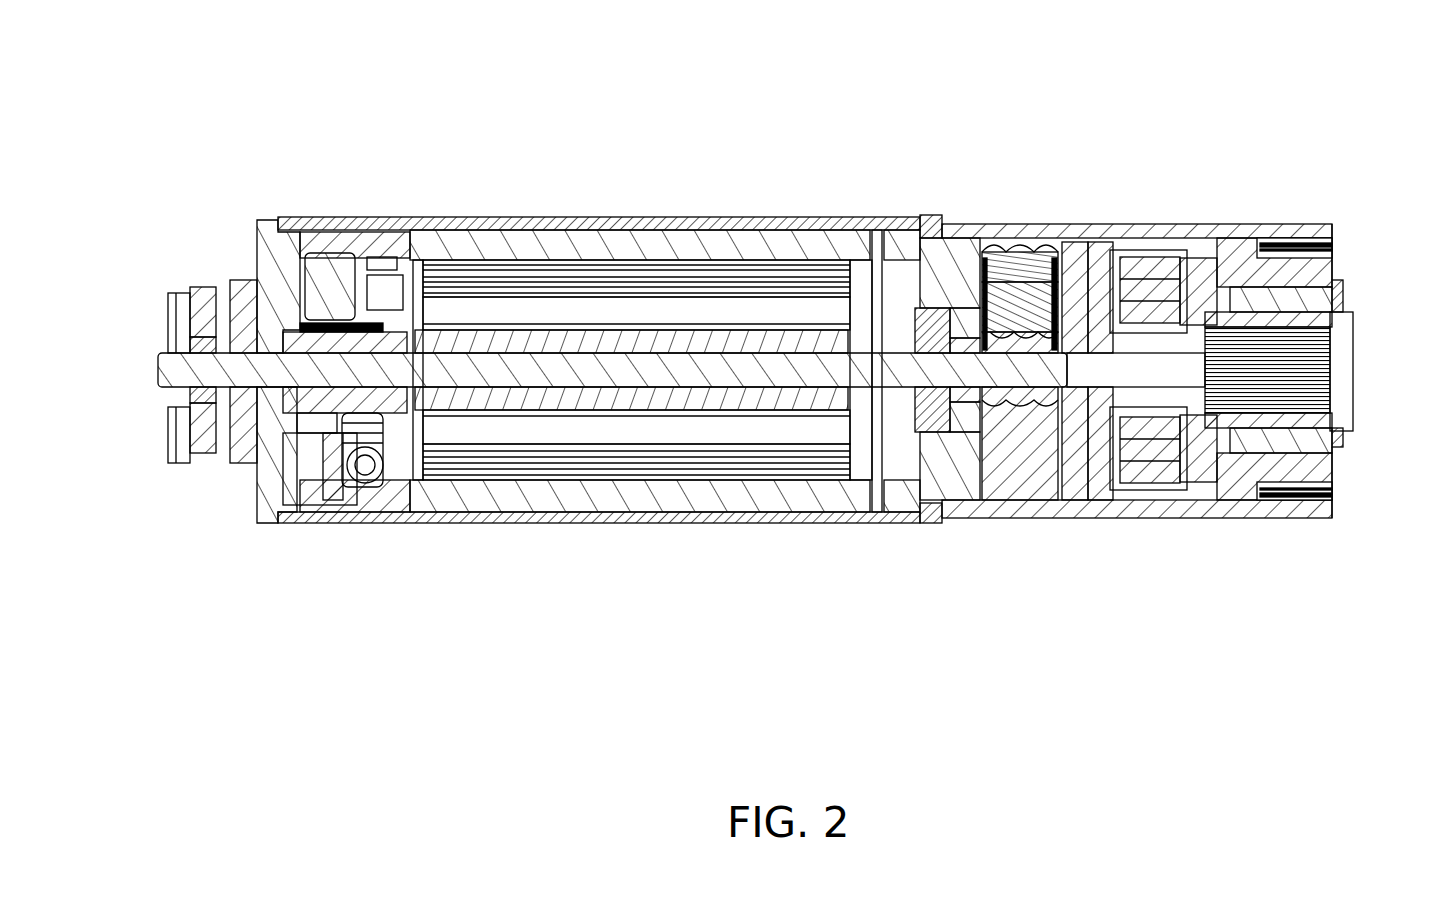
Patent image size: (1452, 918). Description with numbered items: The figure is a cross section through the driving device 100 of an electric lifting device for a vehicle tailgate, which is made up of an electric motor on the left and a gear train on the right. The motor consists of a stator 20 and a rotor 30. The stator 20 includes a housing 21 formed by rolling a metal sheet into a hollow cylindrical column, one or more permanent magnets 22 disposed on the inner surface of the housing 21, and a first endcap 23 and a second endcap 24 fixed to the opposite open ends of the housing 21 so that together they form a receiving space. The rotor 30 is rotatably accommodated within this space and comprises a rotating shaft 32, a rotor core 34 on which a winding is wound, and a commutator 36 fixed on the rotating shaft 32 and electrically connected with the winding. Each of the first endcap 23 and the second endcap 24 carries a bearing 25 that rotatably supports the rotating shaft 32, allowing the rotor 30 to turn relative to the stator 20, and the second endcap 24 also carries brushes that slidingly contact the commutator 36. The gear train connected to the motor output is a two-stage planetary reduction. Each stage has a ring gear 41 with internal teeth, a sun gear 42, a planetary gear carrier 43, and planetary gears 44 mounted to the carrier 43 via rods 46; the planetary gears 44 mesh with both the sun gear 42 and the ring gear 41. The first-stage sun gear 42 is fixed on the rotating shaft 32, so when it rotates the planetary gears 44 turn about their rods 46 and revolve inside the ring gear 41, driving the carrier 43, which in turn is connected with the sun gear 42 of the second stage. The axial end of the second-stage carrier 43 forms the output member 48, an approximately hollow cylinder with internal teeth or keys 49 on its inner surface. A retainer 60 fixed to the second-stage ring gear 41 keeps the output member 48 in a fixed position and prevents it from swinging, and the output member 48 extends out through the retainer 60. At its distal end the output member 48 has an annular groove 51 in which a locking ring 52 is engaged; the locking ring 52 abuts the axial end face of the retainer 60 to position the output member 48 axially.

The driving device 100 is at (798, 28).
The stator 20 is at (900, 132).
The housing 21 is at (472, 224).
The permanent magnets 22 is at (585, 242).
The first endcap 23 is at (877, 232).
The second endcap 24 is at (255, 222).
The bearing 25 is at (250, 463).
The rotor 30 is at (642, 606).
The rotating shaft 32 is at (492, 372).
The rotor core 34 is at (582, 433).
The commutator 36 is at (385, 455).
The ring gear 41 is at (1003, 508).
The sun gear 42 is at (1097, 323).
The planetary gear carrier 43 is at (1080, 312).
The planetary gears 44 is at (1030, 305).
The rods 46 is at (1040, 455).
The output member 48 is at (1340, 368).
The internal teeth or keys 49 is at (1278, 322).
The annular groove 51 is at (1350, 307).
The locking ring 52 is at (1347, 277).
The retainer 60 is at (1298, 518).